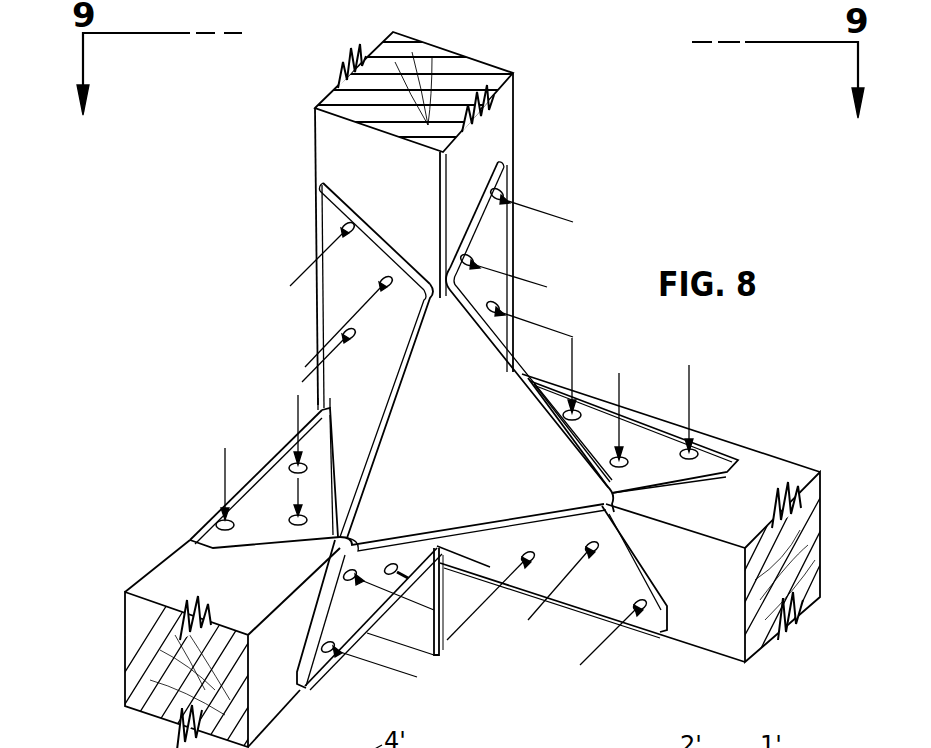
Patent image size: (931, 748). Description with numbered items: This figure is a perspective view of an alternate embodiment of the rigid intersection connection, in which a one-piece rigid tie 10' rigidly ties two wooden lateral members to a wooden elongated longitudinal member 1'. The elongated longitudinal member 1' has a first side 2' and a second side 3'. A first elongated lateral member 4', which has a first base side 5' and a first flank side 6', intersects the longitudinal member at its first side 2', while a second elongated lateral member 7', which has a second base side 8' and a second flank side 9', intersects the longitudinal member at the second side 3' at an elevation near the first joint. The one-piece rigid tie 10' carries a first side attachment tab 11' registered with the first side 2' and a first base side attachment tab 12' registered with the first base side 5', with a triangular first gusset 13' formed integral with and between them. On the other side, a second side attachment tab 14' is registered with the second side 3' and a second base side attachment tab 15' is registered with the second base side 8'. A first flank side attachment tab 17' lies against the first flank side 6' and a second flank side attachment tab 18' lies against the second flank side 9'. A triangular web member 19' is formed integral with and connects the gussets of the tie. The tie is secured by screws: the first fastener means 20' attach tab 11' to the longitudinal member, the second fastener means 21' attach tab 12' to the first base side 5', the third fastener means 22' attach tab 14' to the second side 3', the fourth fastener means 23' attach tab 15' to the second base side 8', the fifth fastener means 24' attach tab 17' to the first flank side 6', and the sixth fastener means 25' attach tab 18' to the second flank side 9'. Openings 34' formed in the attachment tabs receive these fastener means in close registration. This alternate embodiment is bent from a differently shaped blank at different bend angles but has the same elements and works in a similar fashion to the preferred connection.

The elongated longitudinal member 1' is at (379, 218).
The first side 2' is at (372, 261).
The second side 3' is at (467, 224).
The first elongated lateral member 4' is at (228, 615).
The first base side 5' is at (224, 579).
The first flank side 6' is at (276, 663).
The second elongated lateral member 7' is at (647, 522).
The second base side 8' is at (725, 497).
The second flank side 9' is at (712, 577).
The one-piece rigid tie 10' is at (534, 247).
The first side attachment tab 11' is at (348, 295).
The first base side attachment tab 12' is at (265, 473).
The first gusset 13' is at (402, 411).
The second side attachment tab 14' is at (528, 270).
The second base side attachment tab 15' is at (649, 435).
The first flank side attachment tab 17' is at (369, 633).
The second flank side attachment tab 18' is at (634, 605).
The triangular web member 19' is at (529, 377).
The first fastener means 20' is at (325, 301).
The second fastener means 21' is at (240, 455).
The third fastener means 22' is at (551, 254).
The fourth fastener means 23' is at (660, 392).
The fifth fastener means 24' is at (428, 616).
The sixth fastener means 25' is at (484, 608).
The openings 34' is at (457, 420).